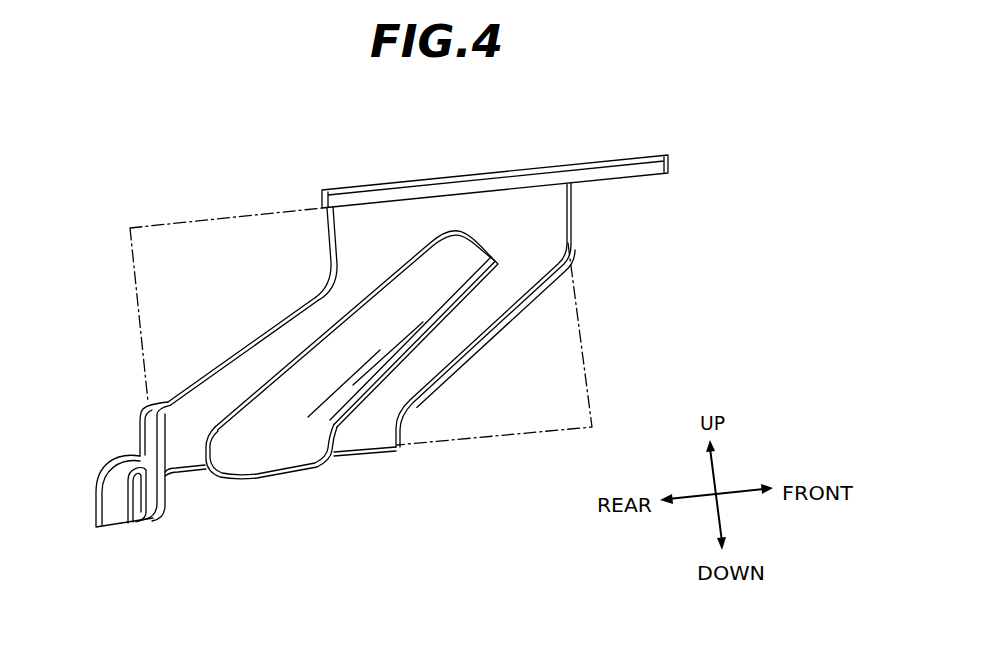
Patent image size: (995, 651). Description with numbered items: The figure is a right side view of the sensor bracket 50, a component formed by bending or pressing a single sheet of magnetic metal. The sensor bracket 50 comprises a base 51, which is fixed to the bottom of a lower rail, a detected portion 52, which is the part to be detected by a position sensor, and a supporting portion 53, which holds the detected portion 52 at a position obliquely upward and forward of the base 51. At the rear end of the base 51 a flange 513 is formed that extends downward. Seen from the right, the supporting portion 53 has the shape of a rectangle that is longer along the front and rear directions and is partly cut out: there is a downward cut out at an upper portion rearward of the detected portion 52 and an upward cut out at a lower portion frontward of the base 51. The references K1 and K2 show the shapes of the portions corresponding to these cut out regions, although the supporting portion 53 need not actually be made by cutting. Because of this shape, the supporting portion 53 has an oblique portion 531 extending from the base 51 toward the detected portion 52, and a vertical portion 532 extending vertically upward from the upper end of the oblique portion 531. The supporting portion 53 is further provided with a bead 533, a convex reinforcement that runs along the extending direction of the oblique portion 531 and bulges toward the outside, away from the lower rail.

The sensor bracket 50 is at (441, 139).
The base 51 is at (360, 455).
The detected portion 52 is at (622, 158).
The supporting portion 53 is at (217, 150).
The oblique portion 531 is at (242, 352).
The vertical portion 532 is at (328, 245).
The bead 533 is at (385, 383).
The flange 513 is at (167, 497).
The cut out portion shape K1 is at (138, 323).
The cut out portion shape K2 is at (583, 340).